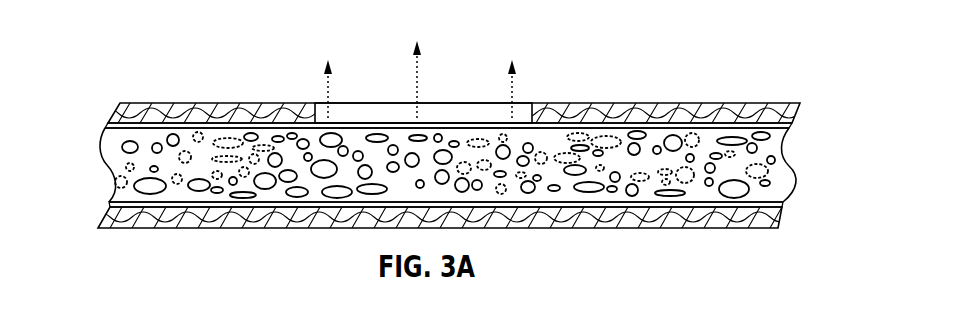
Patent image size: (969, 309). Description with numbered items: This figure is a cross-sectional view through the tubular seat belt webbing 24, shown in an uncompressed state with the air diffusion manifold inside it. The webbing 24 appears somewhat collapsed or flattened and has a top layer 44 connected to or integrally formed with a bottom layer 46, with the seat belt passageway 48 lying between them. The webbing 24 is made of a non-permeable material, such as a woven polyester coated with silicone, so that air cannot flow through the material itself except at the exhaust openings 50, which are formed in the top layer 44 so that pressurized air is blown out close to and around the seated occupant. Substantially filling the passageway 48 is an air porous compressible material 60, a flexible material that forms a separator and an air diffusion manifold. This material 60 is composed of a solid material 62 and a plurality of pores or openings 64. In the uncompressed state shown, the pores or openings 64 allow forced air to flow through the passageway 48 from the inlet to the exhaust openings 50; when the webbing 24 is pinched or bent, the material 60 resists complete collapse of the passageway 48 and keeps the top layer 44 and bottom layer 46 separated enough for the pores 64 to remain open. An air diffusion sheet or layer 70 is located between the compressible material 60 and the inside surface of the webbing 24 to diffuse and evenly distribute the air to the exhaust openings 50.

The tubular seat belt webbing 24 is at (740, 103).
The top layer 44 is at (642, 103).
The bottom layer 46 is at (668, 228).
The seat belt passageway 48 is at (785, 146).
The exhaust openings 50 is at (443, 112).
The air porous compressible material 60 is at (789, 182).
The solid material 62 is at (135, 152).
The pores or openings 64 is at (148, 187).
The air diffusion sheet or layer 70 is at (787, 128).